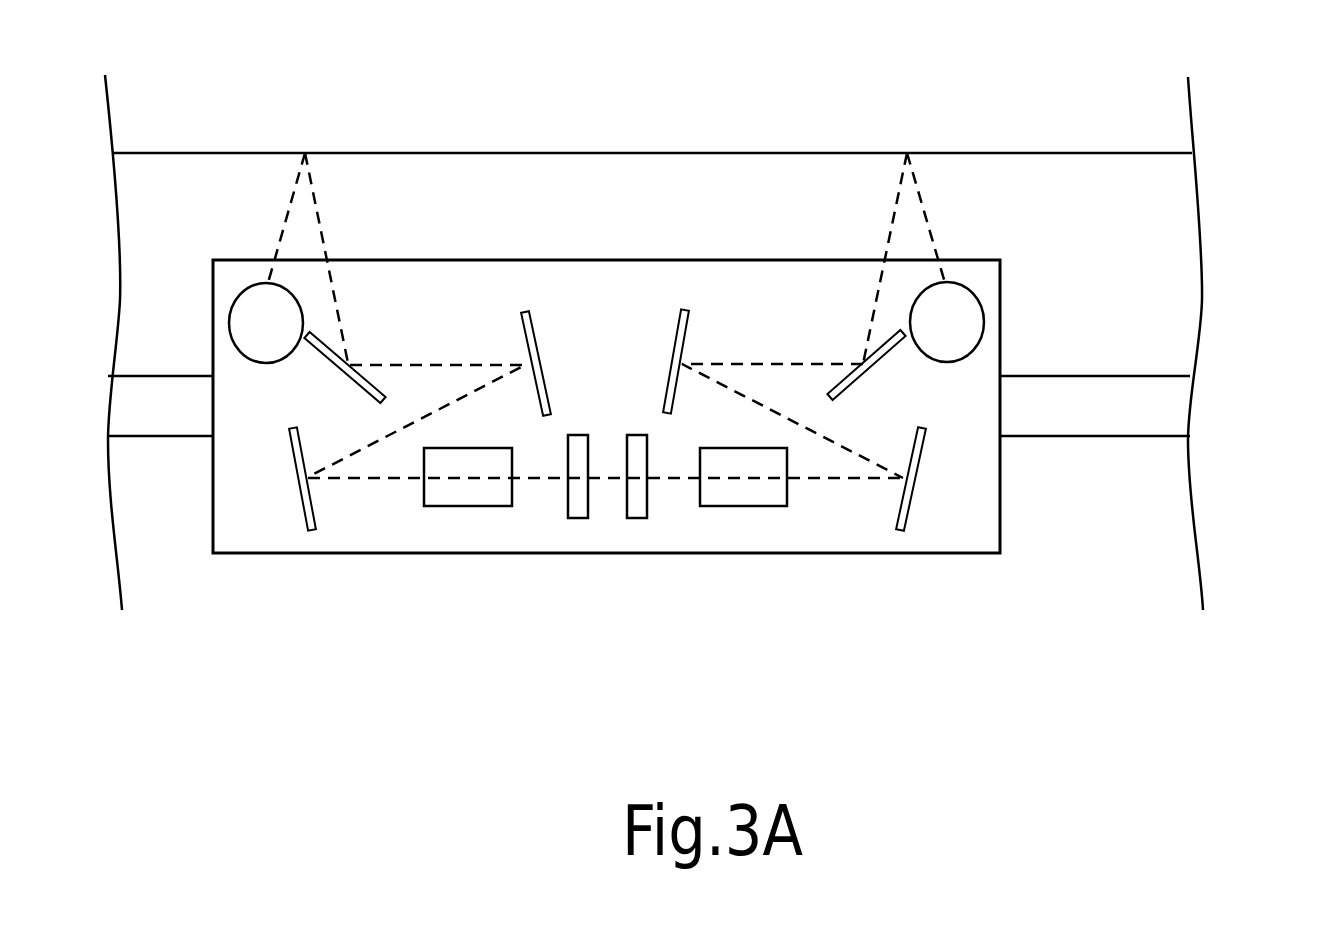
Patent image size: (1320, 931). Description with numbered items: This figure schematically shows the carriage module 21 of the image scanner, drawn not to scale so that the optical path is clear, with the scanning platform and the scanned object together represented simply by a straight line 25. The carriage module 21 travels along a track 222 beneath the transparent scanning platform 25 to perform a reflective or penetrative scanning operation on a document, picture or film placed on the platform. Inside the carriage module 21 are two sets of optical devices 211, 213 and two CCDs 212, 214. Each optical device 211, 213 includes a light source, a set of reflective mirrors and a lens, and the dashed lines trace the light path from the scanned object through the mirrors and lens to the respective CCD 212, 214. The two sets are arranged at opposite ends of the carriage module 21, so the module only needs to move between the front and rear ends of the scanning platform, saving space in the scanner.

The transparent scanning platform 25 is at (575, 153).
The carriage module 21 is at (965, 273).
The optical device 211 is at (360, 283).
The CCD 212 is at (575, 503).
The optical device 213 is at (715, 290).
The CCD 214 is at (633, 503).
The track 222 is at (1128, 413).